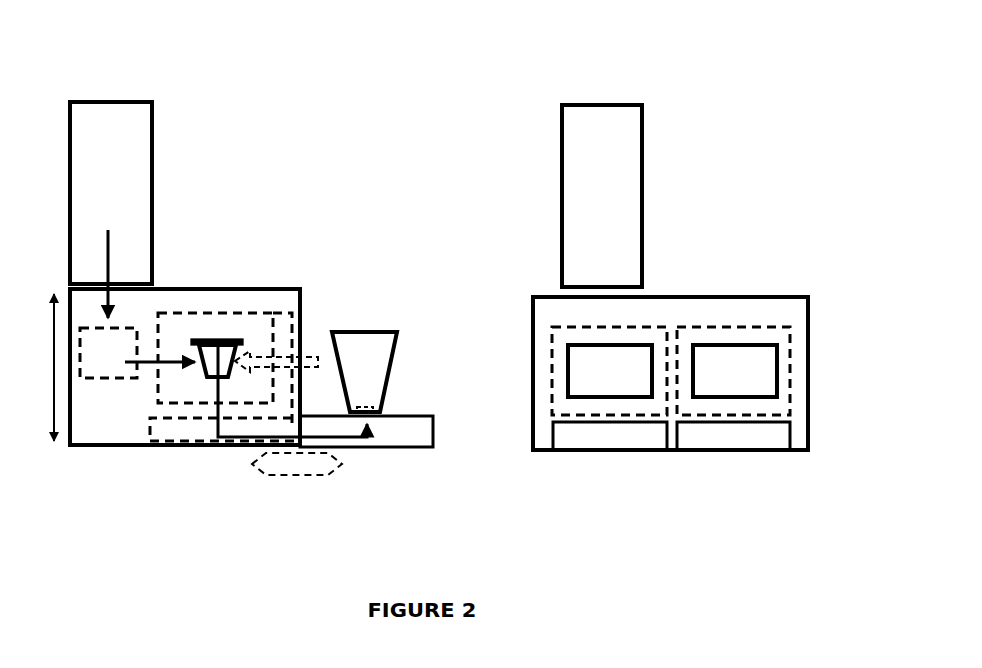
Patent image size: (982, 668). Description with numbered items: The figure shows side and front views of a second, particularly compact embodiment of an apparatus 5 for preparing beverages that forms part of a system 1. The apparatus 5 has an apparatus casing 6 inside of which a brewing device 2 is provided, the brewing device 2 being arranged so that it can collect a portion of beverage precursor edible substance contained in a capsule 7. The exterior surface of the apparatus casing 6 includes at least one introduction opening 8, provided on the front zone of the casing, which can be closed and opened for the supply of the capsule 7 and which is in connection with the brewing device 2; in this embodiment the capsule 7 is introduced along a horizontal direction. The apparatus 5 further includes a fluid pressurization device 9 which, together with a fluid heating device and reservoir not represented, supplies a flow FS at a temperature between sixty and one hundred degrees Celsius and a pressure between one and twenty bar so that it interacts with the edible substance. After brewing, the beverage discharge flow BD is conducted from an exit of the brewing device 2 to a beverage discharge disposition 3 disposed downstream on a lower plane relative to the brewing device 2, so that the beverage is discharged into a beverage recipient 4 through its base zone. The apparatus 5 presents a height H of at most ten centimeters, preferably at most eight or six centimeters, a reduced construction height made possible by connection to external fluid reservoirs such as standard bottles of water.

The system 1 is at (335, 171).
The brewing device 2 is at (476, 372).
The beverage discharge disposition 3 is at (545, 420).
The beverage recipient 4 is at (379, 359).
The apparatus 5 is at (276, 364).
The apparatus casing 6 is at (439, 355).
The capsule 7 is at (278, 377).
The introduction opening 8 is at (547, 340).
The fluid pressurization device 9 is at (108, 353).
The height H is at (37, 367).
The flow FS is at (160, 349).
The beverage discharge flow BD is at (283, 413).